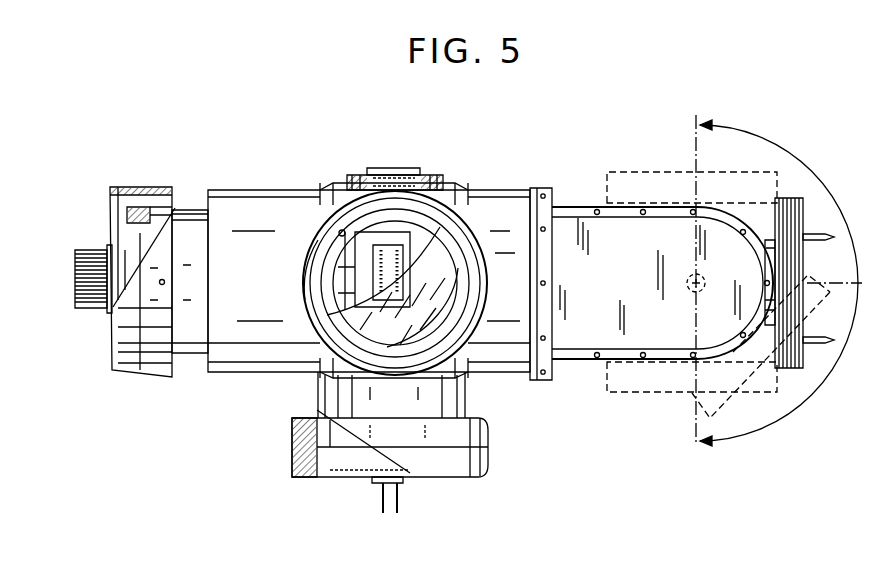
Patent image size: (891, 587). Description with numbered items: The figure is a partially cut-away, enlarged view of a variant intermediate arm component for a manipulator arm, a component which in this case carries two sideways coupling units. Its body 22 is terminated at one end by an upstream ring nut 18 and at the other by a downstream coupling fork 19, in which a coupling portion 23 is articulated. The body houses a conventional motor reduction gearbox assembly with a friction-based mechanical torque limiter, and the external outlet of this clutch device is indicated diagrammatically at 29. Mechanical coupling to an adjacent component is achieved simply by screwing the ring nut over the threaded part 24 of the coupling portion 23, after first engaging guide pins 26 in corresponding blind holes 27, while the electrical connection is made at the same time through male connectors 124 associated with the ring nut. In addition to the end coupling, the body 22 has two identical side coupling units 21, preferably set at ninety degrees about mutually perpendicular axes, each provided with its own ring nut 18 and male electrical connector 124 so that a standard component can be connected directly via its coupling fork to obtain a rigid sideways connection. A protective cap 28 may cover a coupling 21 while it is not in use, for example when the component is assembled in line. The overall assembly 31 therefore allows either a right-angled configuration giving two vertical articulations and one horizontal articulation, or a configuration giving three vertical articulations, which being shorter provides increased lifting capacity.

The ring nut 18 is at (370, 186).
The coupling fork 19 is at (590, 320).
The intermediate coupling unit 21 is at (480, 231).
The body 22 is at (250, 350).
The coupling portion 23 is at (762, 330).
The threaded part 24 is at (793, 198).
The guide pins 26 is at (820, 236).
The blind holes 27 is at (341, 229).
The protective cap 28 is at (455, 335).
The external outlet of the clutch device 29 is at (405, 173).
The actuator assembly 31 is at (245, 181).
The male connectors 124 is at (380, 266).